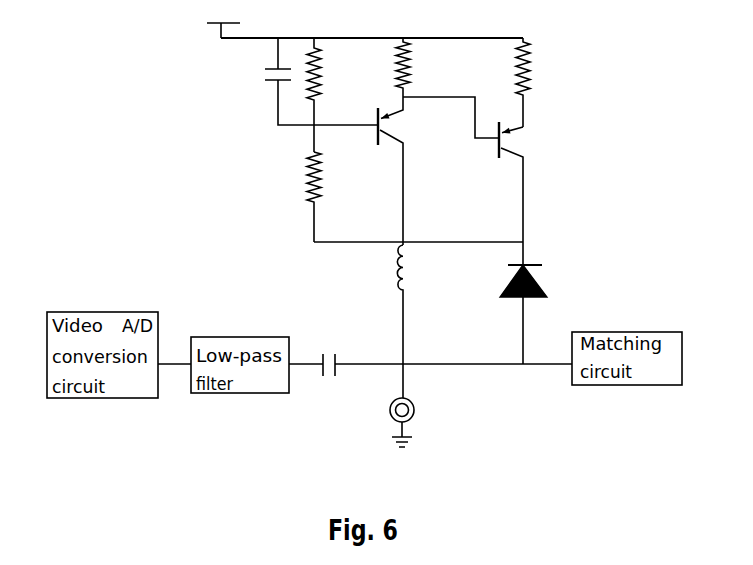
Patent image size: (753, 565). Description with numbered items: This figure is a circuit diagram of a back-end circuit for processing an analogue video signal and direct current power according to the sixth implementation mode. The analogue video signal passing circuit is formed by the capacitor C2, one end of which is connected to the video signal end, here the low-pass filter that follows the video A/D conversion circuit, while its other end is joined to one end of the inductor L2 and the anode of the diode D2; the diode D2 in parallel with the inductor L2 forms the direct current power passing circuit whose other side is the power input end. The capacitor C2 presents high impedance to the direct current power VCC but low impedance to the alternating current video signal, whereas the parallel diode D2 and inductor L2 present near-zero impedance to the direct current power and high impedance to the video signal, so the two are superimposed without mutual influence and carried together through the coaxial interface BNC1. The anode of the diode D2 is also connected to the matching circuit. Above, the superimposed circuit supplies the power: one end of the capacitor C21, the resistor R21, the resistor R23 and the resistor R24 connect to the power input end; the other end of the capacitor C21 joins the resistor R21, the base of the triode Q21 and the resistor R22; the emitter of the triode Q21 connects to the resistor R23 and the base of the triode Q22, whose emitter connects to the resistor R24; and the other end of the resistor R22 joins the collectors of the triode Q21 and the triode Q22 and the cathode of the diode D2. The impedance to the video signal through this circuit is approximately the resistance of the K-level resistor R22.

The direct current power VCC is at (223, 22).
The capacitor C21 is at (305, 81).
The resistor R21 is at (330, 95).
The resistor R22 is at (330, 197).
The resistor R23 is at (418, 67).
The resistor R24 is at (539, 82).
The triode Q21 is at (403, 171).
The triode Q22 is at (529, 193).
The inductor L2 is at (411, 321).
The diode D2 is at (537, 314).
The capacitor C2 is at (329, 356).
The coaxial interface BNC1 is at (429, 422).